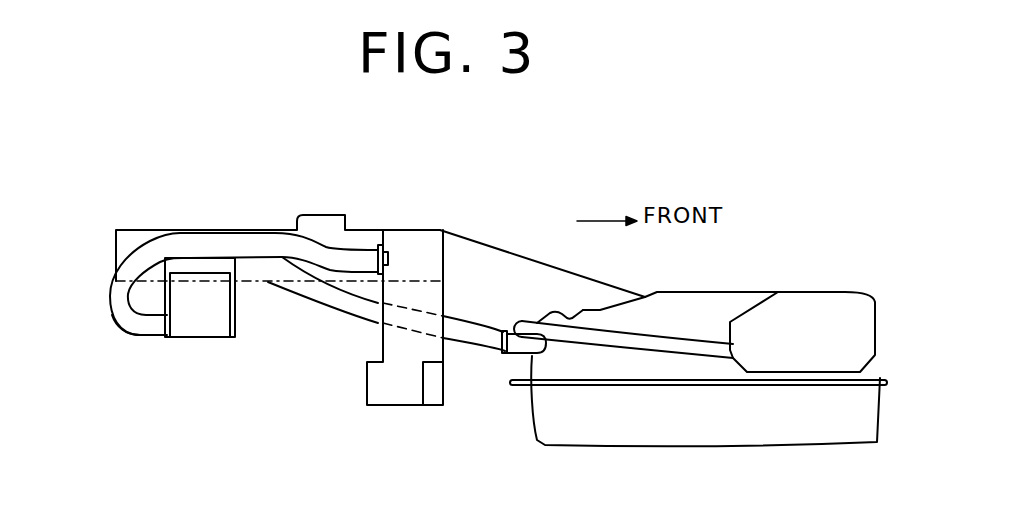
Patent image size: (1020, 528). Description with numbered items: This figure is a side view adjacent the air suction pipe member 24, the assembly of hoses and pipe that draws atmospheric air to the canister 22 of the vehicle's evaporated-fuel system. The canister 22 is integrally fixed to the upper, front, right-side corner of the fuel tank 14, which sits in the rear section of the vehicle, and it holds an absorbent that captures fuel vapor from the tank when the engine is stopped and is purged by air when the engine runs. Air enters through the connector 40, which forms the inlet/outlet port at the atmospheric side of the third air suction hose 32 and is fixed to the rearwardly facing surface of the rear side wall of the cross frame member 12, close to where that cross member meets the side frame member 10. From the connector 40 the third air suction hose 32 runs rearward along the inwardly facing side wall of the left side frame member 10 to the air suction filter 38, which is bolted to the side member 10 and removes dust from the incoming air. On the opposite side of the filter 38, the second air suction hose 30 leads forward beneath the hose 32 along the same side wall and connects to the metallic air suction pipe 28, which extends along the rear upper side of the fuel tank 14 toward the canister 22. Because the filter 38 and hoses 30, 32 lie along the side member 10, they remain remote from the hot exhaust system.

The side frame member 10 is at (132, 235).
The cross frame member 12 is at (395, 400).
The fuel tank 14 is at (530, 425).
The canister 22 is at (818, 310).
The air suction pipe member 24 is at (127, 342).
The air suction pipe 28 is at (687, 343).
The second air suction hose 30 is at (340, 315).
The third air suction hose 32 is at (229, 239).
The air suction filter 38 is at (199, 327).
The connector 40 is at (388, 256).